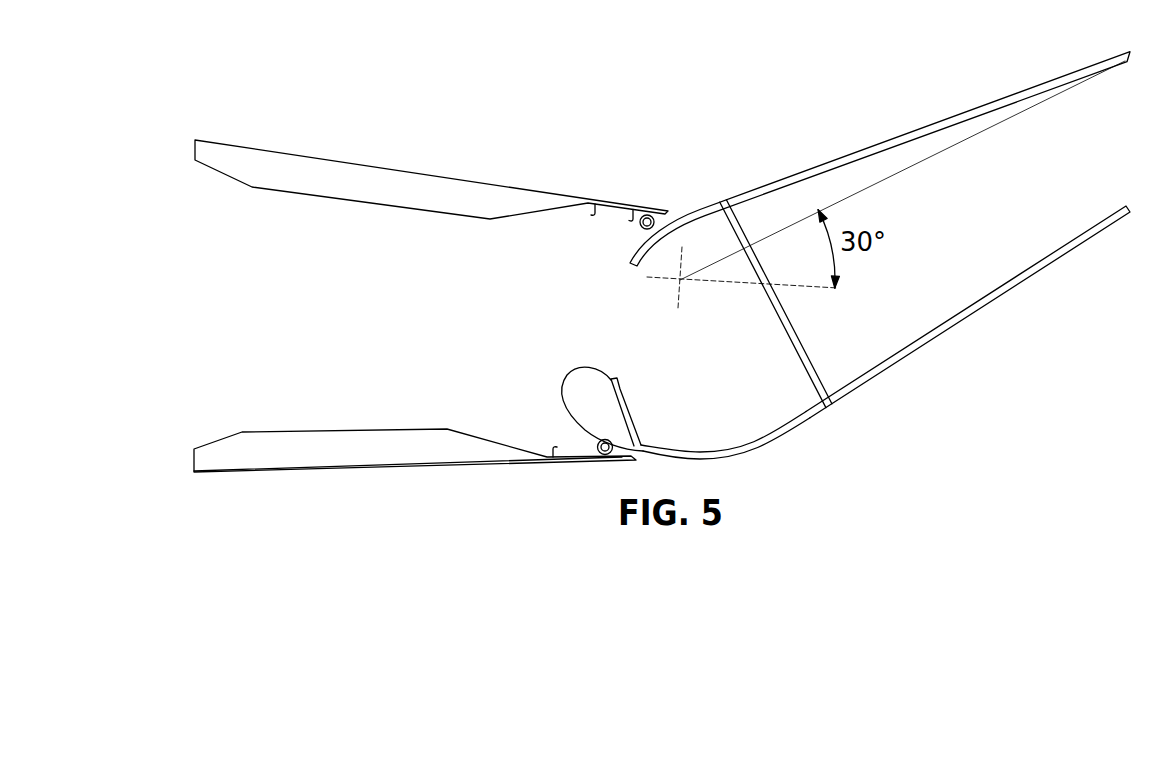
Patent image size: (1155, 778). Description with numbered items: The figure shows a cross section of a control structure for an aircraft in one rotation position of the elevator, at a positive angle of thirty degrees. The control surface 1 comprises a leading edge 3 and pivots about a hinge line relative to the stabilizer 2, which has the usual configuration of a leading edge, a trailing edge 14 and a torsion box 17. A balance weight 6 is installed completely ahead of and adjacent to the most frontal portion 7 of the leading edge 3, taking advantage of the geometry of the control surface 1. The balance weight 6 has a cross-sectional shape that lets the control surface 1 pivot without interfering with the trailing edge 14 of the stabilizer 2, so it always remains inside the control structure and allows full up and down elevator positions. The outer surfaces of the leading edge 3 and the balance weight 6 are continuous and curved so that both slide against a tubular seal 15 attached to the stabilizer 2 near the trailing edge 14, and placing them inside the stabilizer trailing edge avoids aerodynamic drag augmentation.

The control surface 1 is at (990, 304).
The stabilizer 2 is at (381, 182).
The leading edge 3 is at (748, 452).
The balance weight 6 is at (585, 390).
The most frontal portion 7 is at (628, 412).
The trailing edge 14 is at (633, 452).
The tubular seal 15 is at (592, 450).
The torsion box 17 is at (172, 312).